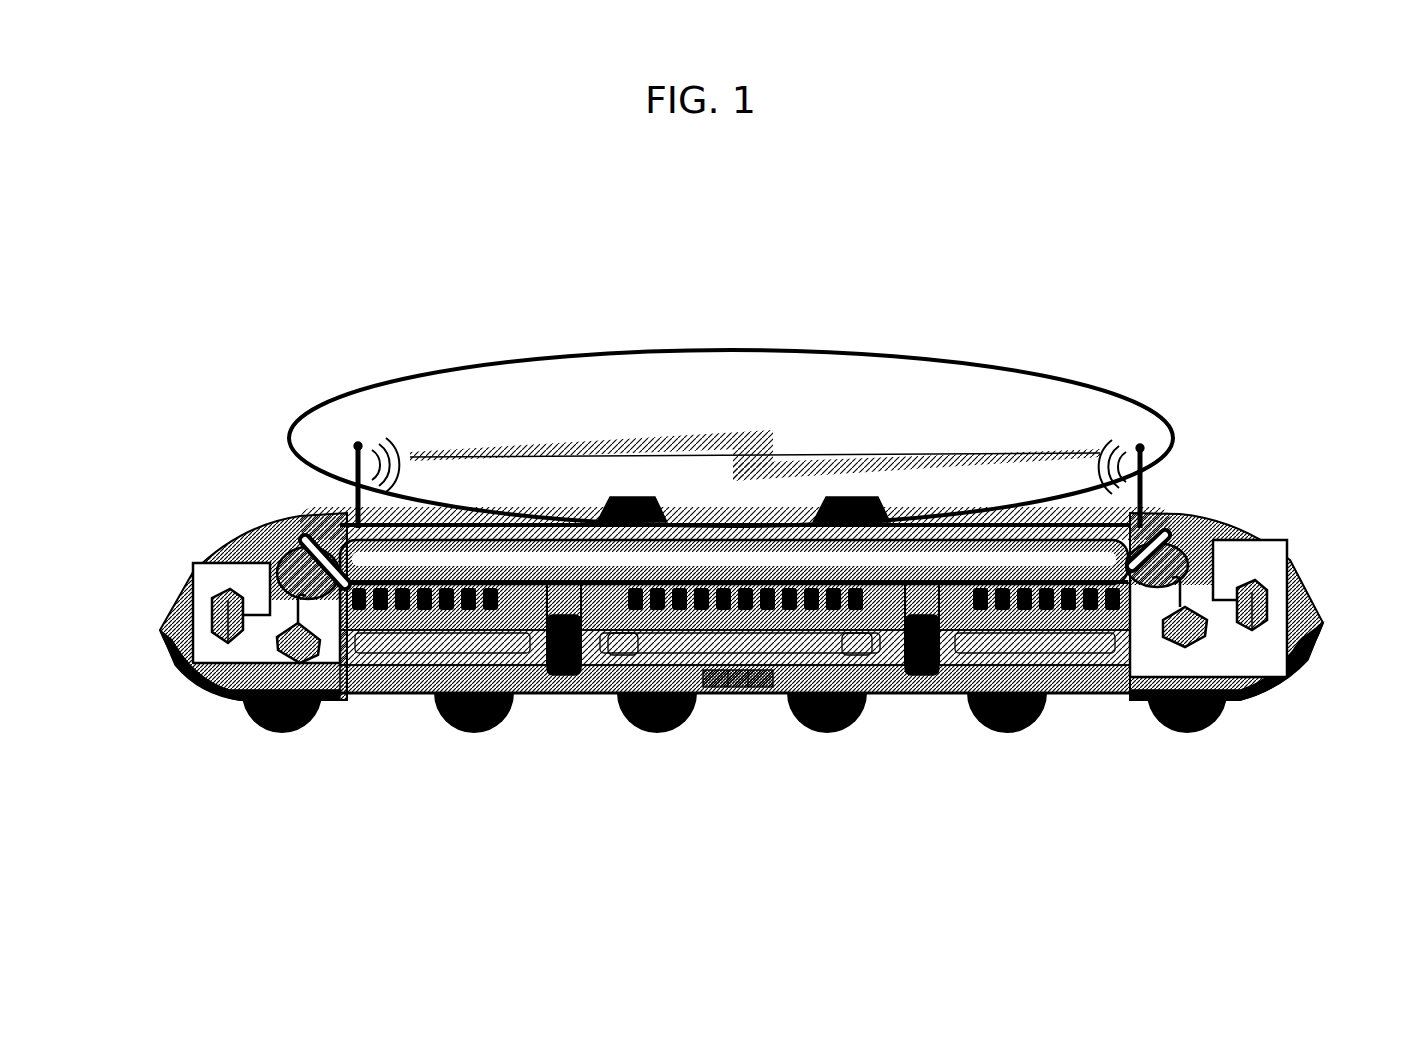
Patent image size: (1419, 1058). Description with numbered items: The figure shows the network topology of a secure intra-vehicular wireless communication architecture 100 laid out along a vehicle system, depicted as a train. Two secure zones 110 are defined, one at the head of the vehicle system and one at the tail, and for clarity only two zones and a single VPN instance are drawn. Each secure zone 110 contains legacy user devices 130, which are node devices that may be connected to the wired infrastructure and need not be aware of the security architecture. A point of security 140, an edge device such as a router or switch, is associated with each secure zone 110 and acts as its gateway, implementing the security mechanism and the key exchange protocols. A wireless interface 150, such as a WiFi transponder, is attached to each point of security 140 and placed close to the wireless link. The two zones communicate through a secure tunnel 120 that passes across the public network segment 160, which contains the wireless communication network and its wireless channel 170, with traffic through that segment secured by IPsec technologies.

The secure intra-vehicular wireless communication architecture 100 is at (1093, 183).
The secure zone 110 is at (188, 548).
The secure tunnel 120 is at (568, 556).
The legacy user device 130 is at (218, 657).
The point of security 140 is at (302, 545).
The wireless interface 150 is at (360, 432).
The public network segment 160 is at (773, 338).
The wireless channel 170 is at (665, 415).